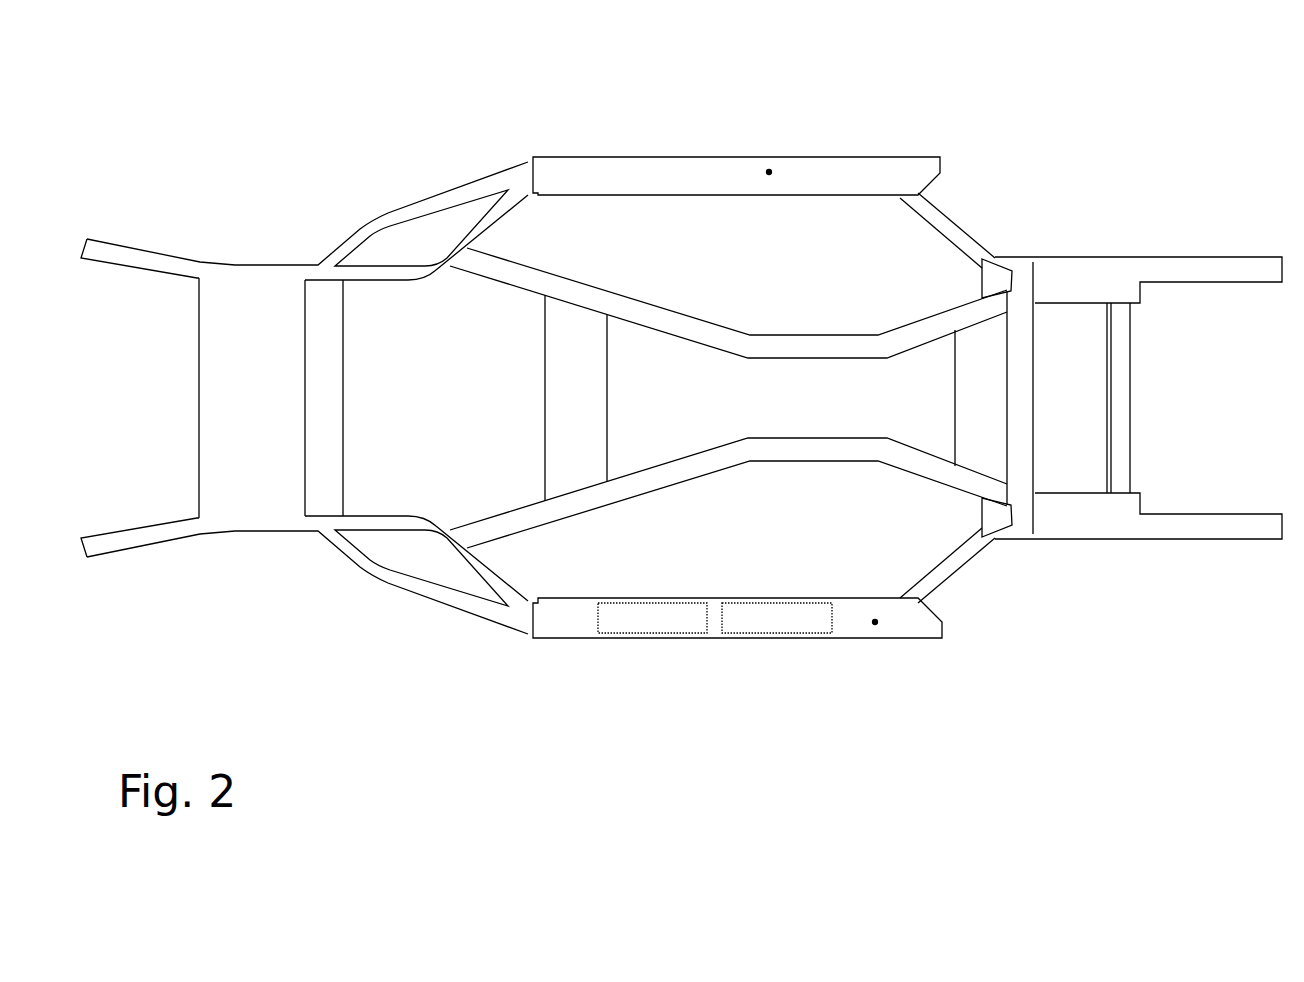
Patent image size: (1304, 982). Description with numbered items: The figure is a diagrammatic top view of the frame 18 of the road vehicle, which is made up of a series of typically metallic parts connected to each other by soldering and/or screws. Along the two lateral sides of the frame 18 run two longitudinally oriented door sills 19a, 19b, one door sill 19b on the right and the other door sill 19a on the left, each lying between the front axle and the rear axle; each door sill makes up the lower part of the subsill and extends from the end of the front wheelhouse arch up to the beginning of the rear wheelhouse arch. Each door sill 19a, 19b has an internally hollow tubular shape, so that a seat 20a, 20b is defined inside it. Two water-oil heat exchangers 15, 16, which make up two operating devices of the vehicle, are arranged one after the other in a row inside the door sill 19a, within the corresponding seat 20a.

The water-oil heat exchanger 15 is at (630, 618).
The water-oil heat exchanger 16 is at (777, 615).
The frame 18 is at (1117, 707).
The door sill 19a is at (570, 638).
The door sill 19b is at (647, 157).
The seat 20a is at (875, 625).
The seat 20b is at (769, 170).